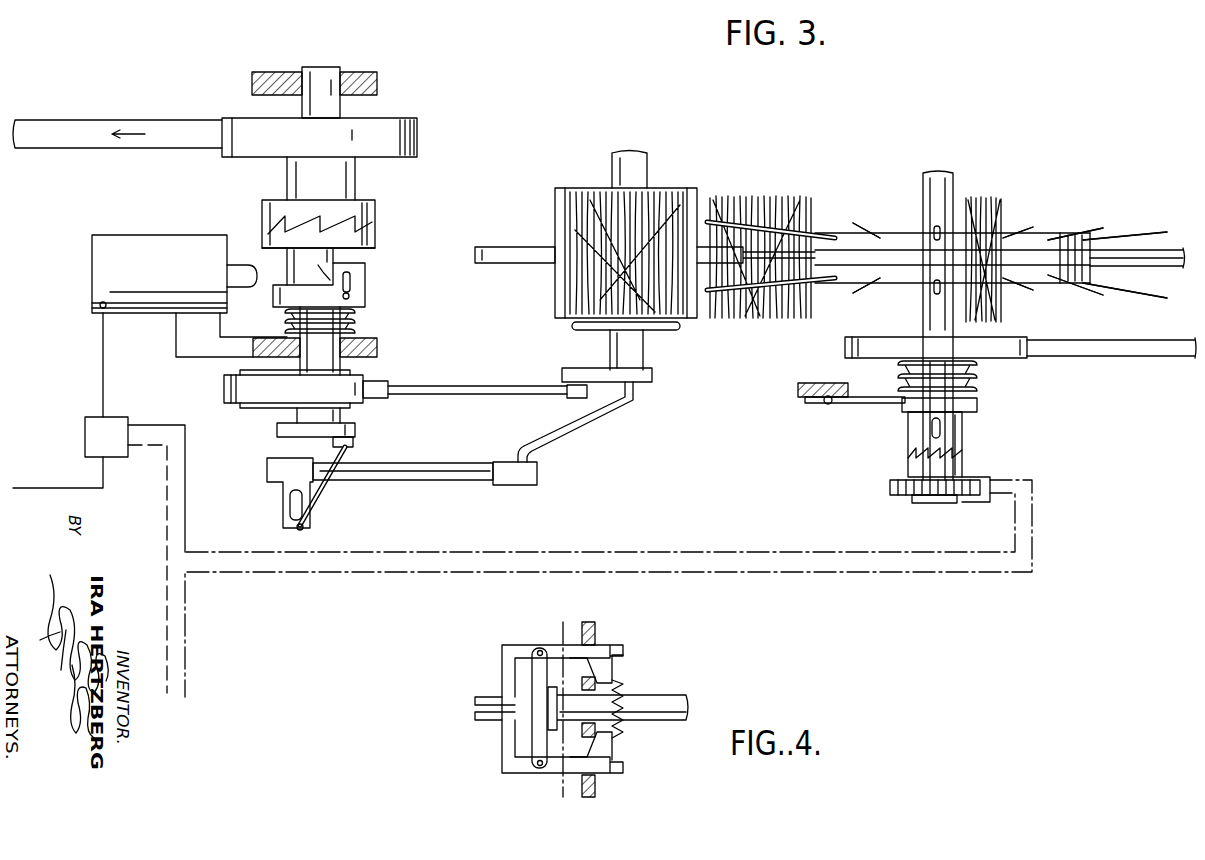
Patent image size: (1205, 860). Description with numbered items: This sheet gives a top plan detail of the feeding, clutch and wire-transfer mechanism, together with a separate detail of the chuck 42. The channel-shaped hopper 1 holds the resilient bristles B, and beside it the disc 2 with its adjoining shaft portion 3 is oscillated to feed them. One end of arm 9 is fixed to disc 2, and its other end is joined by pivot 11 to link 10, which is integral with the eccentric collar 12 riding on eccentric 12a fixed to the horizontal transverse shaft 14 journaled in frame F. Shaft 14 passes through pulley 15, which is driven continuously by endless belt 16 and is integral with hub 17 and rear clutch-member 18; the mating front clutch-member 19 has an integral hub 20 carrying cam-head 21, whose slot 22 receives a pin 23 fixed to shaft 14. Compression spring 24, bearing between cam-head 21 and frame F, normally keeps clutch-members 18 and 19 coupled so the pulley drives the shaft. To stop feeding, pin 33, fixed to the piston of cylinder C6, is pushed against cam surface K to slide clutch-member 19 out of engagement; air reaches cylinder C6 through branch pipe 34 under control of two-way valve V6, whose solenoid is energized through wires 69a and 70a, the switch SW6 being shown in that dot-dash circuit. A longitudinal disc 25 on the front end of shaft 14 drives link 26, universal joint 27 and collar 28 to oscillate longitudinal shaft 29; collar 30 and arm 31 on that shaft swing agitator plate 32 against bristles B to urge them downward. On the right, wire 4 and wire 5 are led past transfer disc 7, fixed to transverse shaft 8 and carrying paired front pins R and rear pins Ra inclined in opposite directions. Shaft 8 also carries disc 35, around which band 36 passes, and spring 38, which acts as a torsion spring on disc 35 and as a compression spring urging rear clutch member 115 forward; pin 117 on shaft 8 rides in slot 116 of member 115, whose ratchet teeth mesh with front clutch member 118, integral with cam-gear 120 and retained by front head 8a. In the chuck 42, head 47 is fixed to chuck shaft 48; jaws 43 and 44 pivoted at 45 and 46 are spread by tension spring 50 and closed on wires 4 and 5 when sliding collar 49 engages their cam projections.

In FIG. 3, the hopper 1 is at (680, 190).
In FIG. 3, the disc 2 is at (505, 250).
In FIG. 3, the shaft 3 is at (760, 250).
In FIG. 3, the wire 4 is at (1035, 245).
In FIG. 3, the wire 5 is at (1160, 270).
In FIG. 3, the transfer disc 7 is at (898, 235).
In FIG. 3, the shaft 8 is at (950, 185).
In FIG. 3, the front head 8a is at (928, 503).
In FIG. 3, the arm 9 is at (600, 375).
In FIG. 3, the link 10 is at (480, 388).
In FIG. 3, the pivot 11 is at (568, 398).
In FIG. 3, the eccentric collar 12 is at (232, 388).
In FIG. 3, the eccentric 12a is at (255, 408).
In FIG. 3, the shaft 14 is at (330, 70).
In FIG. 3, the pulley 15 is at (410, 122).
In FIG. 3, the endless belt 16 is at (80, 135).
In FIG. 3, the hub 17 is at (340, 181).
In FIG. 3, the rear clutch-member 18 is at (374, 210).
In FIG. 3, the front clutch-member 19 is at (374, 238).
In FIG. 3, the hub 20 is at (292, 258).
In FIG. 3, the cam-head 21 is at (362, 287).
In FIG. 3, the transverse slot 22 is at (350, 277).
In FIG. 3, the pin 23 is at (348, 297).
In FIG. 3, the biasing compression spring 24 is at (352, 333).
In FIG. 3, the longitudinal disc 25 is at (358, 432).
In FIG. 3, the link 26 is at (315, 495).
In FIG. 3, the universal joint 27 is at (302, 533).
In FIG. 3, the collar 28 is at (275, 478).
In FIG. 3, the longitudinal shaft 29 is at (440, 462).
In FIG. 3, the collar 30 is at (537, 478).
In FIG. 3, the arm 31 is at (602, 416).
In FIG. 3, the agitator plate 32 is at (665, 330).
In FIG. 3, the pin 33 is at (245, 270).
In FIG. 3, the branch pipe 34 is at (108, 362).
In FIG. 3, the disc 35 is at (1020, 358).
In FIG. 3, the flexible band 36 is at (1135, 357).
In FIG. 3, the spring 38 is at (978, 395).
In FIG. 4, the chuck 42 is at (637, 634).
In FIG. 4, the jaw 43 is at (488, 697).
In FIG. 4, the jaw 44 is at (495, 718).
In FIG. 4, the pivot 45 is at (540, 650).
In FIG. 4, the pivot 46 is at (538, 770).
In FIG. 4, the head 47 is at (535, 668).
In FIG. 4, the chuck shaft 48 is at (675, 700).
In FIG. 4, the collar 49 is at (600, 680).
In FIG. 4, the tension spring 50 is at (628, 737).
In FIG. 3, the wire 69a is at (185, 660).
In FIG. 3, the wire 70a is at (167, 693).
In FIG. 3, the rear clutch member 115 is at (963, 440).
In FIG. 3, the transverse slot 116 is at (925, 425).
In FIG. 3, the pin 117 is at (928, 440).
In FIG. 3, the front clutch member 118 is at (918, 468).
In FIG. 3, the cam-gear 120 is at (975, 490).
In FIG. 3, the resilient bristles B is at (572, 200).
In FIG. 3, the frame F is at (370, 85).
In FIG. 3, the cam surface K is at (321, 265).
In FIG. 3, the front pins R is at (865, 290).
In FIG. 3, the rear pins Ra is at (1090, 235).
In FIG. 3, the cylinder C6 is at (159, 274).
In FIG. 3, the valve V6 is at (106, 437).
In FIG. 3, the switch SW6 is at (985, 476).